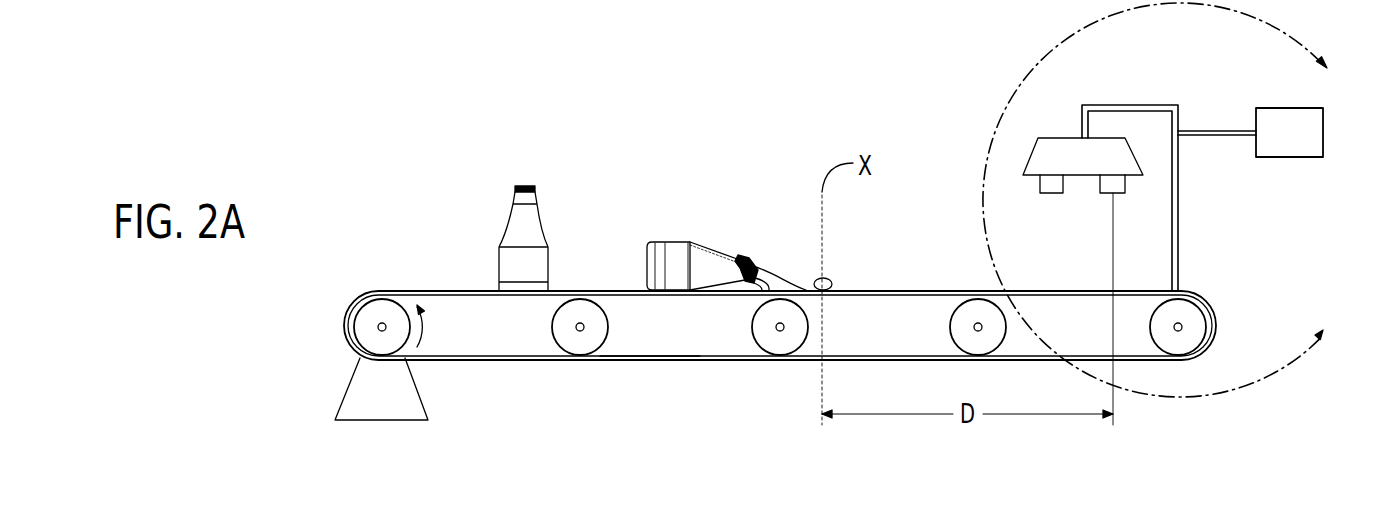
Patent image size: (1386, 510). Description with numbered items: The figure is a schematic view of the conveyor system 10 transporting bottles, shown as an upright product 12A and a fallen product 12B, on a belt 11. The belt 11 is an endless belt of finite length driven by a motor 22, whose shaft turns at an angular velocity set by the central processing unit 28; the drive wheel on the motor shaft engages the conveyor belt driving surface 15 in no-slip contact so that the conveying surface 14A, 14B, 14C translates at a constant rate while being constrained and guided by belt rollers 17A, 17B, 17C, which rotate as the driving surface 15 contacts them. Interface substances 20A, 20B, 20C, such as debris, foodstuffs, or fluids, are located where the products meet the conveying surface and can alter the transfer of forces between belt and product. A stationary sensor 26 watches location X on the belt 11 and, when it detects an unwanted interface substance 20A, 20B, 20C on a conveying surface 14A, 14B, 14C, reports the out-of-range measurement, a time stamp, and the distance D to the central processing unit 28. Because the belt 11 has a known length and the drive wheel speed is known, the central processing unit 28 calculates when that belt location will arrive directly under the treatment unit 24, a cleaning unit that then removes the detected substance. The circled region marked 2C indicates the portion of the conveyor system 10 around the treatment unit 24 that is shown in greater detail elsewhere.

The conveyor system 10 is at (456, 71).
The belt 11 is at (405, 290).
The product 12A is at (518, 185).
The product 12B is at (733, 258).
The conveying surface 14A is at (483, 290).
The conveying surface 14B is at (623, 290).
The conveying surface 14C is at (1078, 290).
The conveyor belt driving surface 15 is at (651, 357).
The belt roller 17A is at (580, 354).
The belt roller 17B is at (760, 352).
The belt roller 17C is at (968, 345).
The interface substance 20A is at (769, 209).
The interface substance 20B is at (769, 209).
The interface substance 20C is at (770, 282).
The motor 22 is at (365, 320).
The treatment unit 24 is at (1058, 138).
The sensor 26 is at (828, 279).
The central processing unit 28 is at (1288, 157).
The detail view region of FIG. 2C is at (1168, 200).